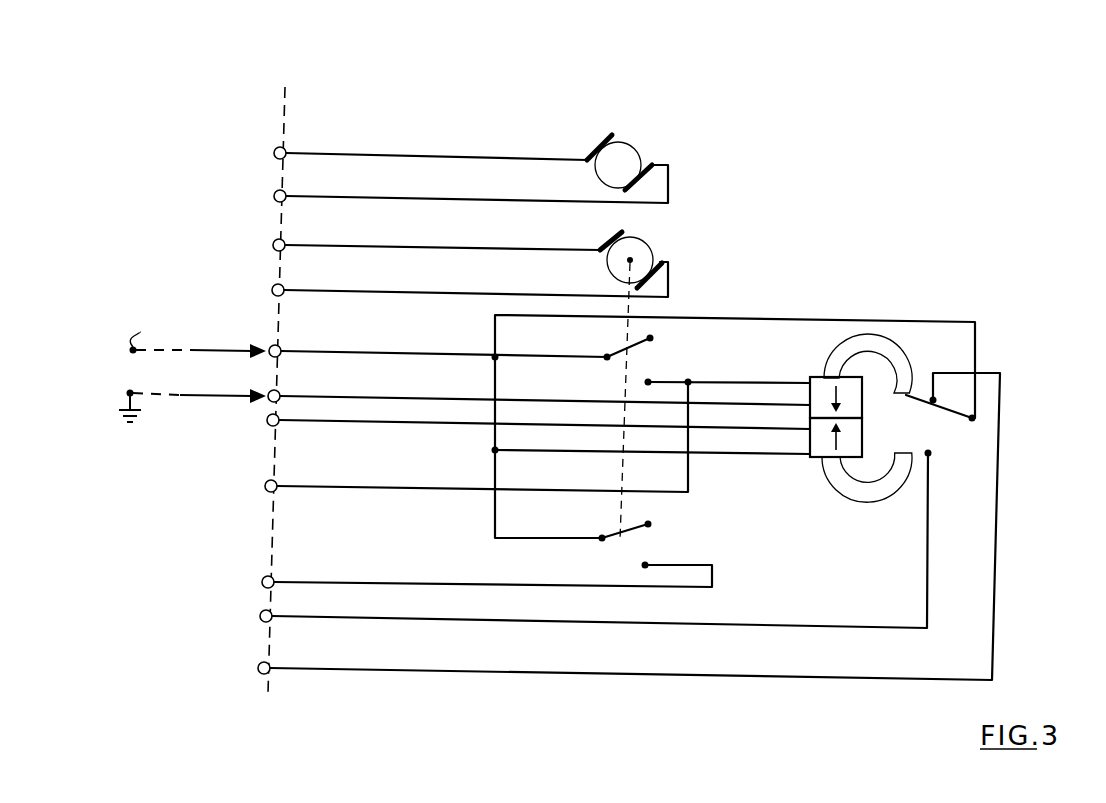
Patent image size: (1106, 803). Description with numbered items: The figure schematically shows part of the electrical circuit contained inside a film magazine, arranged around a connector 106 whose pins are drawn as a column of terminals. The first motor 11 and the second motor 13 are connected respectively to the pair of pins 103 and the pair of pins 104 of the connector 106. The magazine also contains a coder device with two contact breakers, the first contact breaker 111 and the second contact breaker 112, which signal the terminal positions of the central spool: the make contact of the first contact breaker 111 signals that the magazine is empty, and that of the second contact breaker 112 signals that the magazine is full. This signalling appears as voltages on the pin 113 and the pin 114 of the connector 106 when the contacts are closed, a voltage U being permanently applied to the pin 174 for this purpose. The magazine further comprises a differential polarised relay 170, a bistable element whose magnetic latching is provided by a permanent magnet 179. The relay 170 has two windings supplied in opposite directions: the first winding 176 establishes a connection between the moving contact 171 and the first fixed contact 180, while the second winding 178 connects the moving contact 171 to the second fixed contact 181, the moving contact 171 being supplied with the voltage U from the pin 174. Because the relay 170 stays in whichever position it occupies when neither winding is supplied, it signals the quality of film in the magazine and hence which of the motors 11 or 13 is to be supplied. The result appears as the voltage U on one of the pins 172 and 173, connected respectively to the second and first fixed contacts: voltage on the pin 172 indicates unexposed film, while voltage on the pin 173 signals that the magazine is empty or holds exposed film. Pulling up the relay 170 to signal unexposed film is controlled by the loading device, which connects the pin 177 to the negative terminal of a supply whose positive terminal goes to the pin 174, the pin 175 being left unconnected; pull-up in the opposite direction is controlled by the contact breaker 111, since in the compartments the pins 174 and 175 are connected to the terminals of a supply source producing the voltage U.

The connector 106 is at (286, 112).
The pair of pins 104 is at (286, 158).
The pair of pins 103 is at (284, 250).
The second motor 13 is at (641, 147).
The first motor 11 is at (655, 240).
The pin 174 is at (280, 357).
The pin 175 is at (280, 394).
The pin 177 is at (280, 418).
The pin 113 is at (276, 480).
The pin 114 is at (273, 576).
The first pin 172 is at (271, 611).
The second pin 173 is at (269, 662).
The first contact breaker 111 is at (630, 348).
The second contact breaker 112 is at (628, 535).
The differential polarised relay 170 is at (824, 376).
The first winding 176 is at (864, 406).
The second winding 178 is at (864, 437).
The permanent magnet 179 is at (845, 502).
The first fixed contact 180 is at (934, 396).
The moving contact 171 is at (936, 406).
The second fixed contact 181 is at (931, 458).